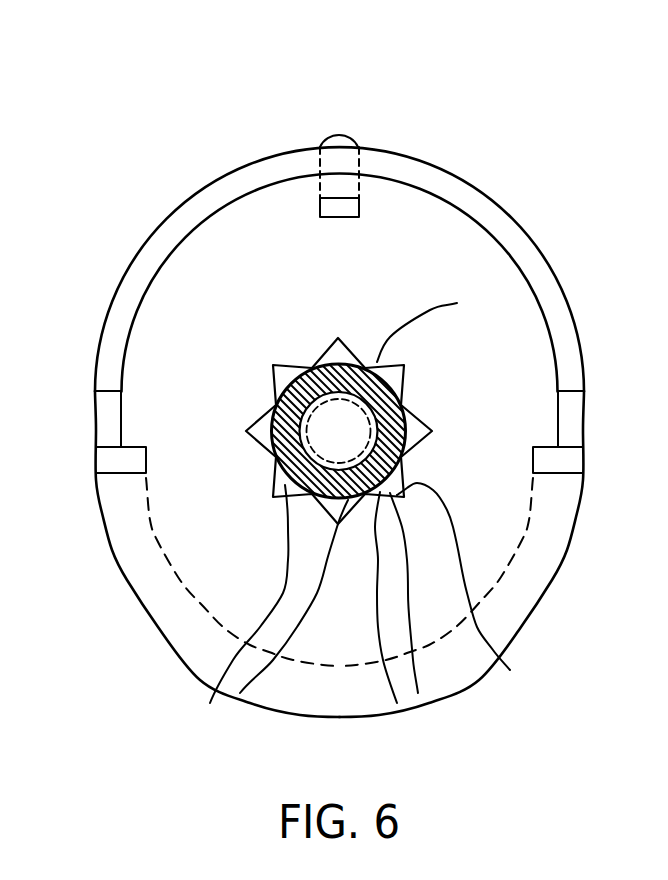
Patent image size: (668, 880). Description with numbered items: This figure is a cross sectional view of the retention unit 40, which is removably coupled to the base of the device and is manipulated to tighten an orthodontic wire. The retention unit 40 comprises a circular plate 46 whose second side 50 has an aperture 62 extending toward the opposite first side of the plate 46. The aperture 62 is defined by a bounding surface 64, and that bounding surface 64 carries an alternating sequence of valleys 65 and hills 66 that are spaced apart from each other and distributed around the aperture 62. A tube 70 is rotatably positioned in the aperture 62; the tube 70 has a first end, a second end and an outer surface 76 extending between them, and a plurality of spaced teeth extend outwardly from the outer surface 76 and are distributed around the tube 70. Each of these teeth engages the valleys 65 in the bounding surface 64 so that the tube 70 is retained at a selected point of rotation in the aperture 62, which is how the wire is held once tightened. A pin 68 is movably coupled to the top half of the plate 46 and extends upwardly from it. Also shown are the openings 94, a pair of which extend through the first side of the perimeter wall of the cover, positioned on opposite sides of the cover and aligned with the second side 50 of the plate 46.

The retention unit 40 is at (205, 117).
The plate 46 is at (453, 233).
The second side 50 is at (398, 213).
The aperture 62 is at (432, 425).
The bounding surface 64 is at (510, 670).
The valleys 65 is at (338, 340).
The hills 66 is at (418, 693).
The pin 68 is at (345, 134).
The tube 70 is at (457, 303).
The outer surface 76 is at (240, 693).
The openings 94 is at (90, 415).